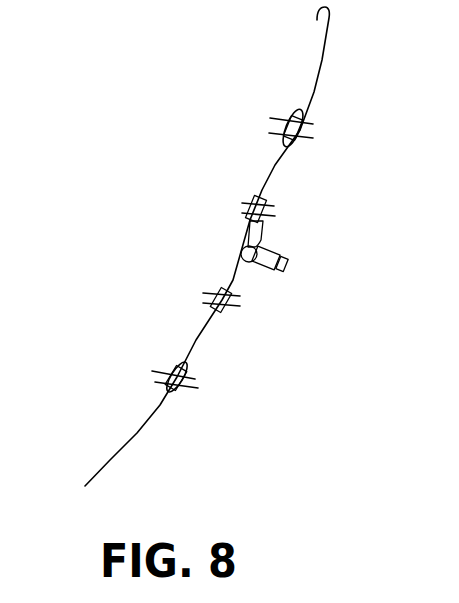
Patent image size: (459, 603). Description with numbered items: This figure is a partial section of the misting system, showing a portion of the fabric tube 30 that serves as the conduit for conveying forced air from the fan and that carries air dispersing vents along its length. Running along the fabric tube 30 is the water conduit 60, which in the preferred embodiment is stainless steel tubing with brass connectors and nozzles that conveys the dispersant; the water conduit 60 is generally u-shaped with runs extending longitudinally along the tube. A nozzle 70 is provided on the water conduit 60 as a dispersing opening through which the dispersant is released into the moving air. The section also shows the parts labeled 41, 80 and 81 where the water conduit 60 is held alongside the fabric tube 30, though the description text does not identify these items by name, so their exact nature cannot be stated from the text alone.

The fabric tube 30 is at (138, 433).
The ring clamp 41 is at (273, 163).
The water conduit 60 is at (246, 262).
The nozzle 70 is at (286, 268).
The clamp assembly 80 is at (237, 229).
The clamp body 81 is at (265, 237).